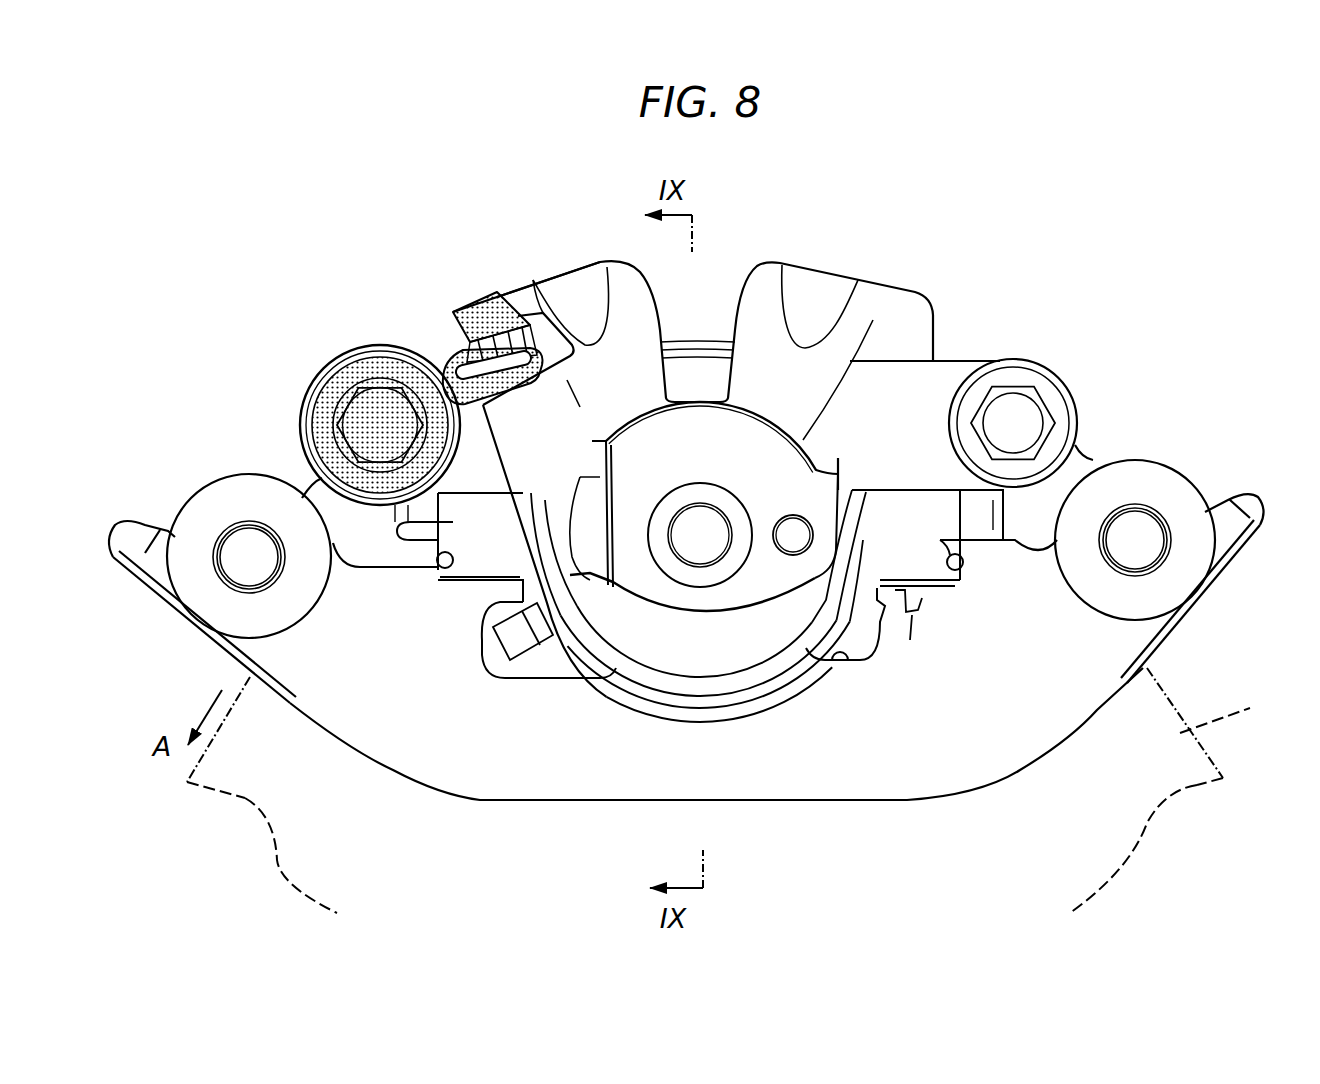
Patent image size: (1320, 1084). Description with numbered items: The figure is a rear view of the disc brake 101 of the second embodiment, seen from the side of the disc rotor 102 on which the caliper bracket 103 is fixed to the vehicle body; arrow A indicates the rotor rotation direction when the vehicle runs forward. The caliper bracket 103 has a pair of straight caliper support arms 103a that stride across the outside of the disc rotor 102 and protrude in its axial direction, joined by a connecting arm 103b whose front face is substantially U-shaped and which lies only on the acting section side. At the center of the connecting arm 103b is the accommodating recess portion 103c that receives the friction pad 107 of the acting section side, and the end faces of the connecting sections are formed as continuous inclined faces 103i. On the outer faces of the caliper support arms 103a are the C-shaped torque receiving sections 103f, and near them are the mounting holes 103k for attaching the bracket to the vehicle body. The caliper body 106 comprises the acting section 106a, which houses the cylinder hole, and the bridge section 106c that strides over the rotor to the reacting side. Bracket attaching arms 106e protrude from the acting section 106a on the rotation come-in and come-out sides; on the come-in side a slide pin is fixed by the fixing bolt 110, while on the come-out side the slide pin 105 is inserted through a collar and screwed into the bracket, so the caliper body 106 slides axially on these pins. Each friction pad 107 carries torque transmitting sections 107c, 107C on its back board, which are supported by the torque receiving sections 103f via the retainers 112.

The disc brake 101 is at (942, 208).
The disc rotor 102 is at (1250, 708).
The caliper bracket 103 is at (852, 806).
The caliper support arm 103a is at (312, 487).
The connecting arm 103b is at (767, 800).
The accommodating recess portion 103c is at (843, 662).
The torque receiving section 103f is at (440, 583).
The inclined face 103i is at (177, 604).
The mounting hole 103k is at (258, 532).
The slide pin 105 is at (380, 405).
The caliper body 106 is at (825, 260).
The acting section 106a is at (690, 663).
The bridge section 106c is at (582, 292).
The bracket attaching arm 106e is at (487, 480).
The friction pad 107 is at (560, 678).
The torque transmitting section 107c is at (397, 532).
The torque transmitting section 107C is at (963, 545).
The fixing bolt 110 is at (1030, 410).
The retainer 112 is at (482, 605).